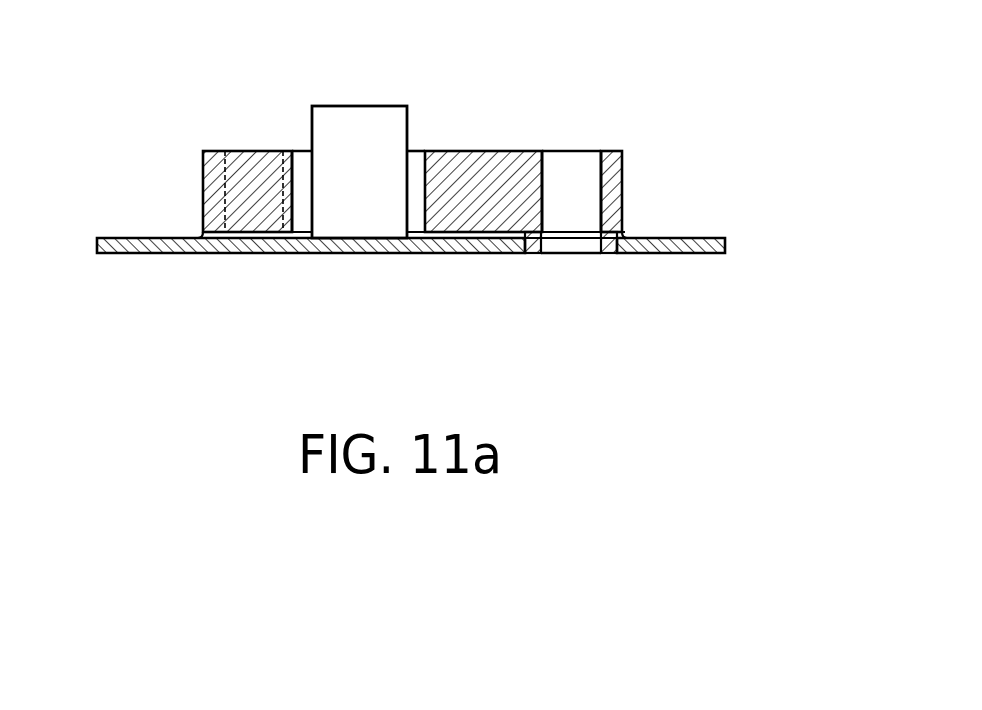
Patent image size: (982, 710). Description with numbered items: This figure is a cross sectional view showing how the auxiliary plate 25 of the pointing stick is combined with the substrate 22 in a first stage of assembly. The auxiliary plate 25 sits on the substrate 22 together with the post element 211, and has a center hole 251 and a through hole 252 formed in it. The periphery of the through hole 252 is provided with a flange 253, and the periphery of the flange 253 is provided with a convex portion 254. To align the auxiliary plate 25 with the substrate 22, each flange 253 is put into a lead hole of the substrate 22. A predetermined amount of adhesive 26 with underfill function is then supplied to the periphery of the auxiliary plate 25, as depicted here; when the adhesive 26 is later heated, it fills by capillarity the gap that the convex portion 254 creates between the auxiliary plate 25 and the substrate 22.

The substrate 22 is at (725, 248).
The adhesive 26 is at (625, 237).
The auxiliary plate 25 is at (607, 181).
The center hole 251 is at (304, 197).
The through hole 252 is at (572, 172).
The block / post 211 is at (359, 122).
The convex portion 254 is at (526, 236).
The flange 253 is at (604, 236).